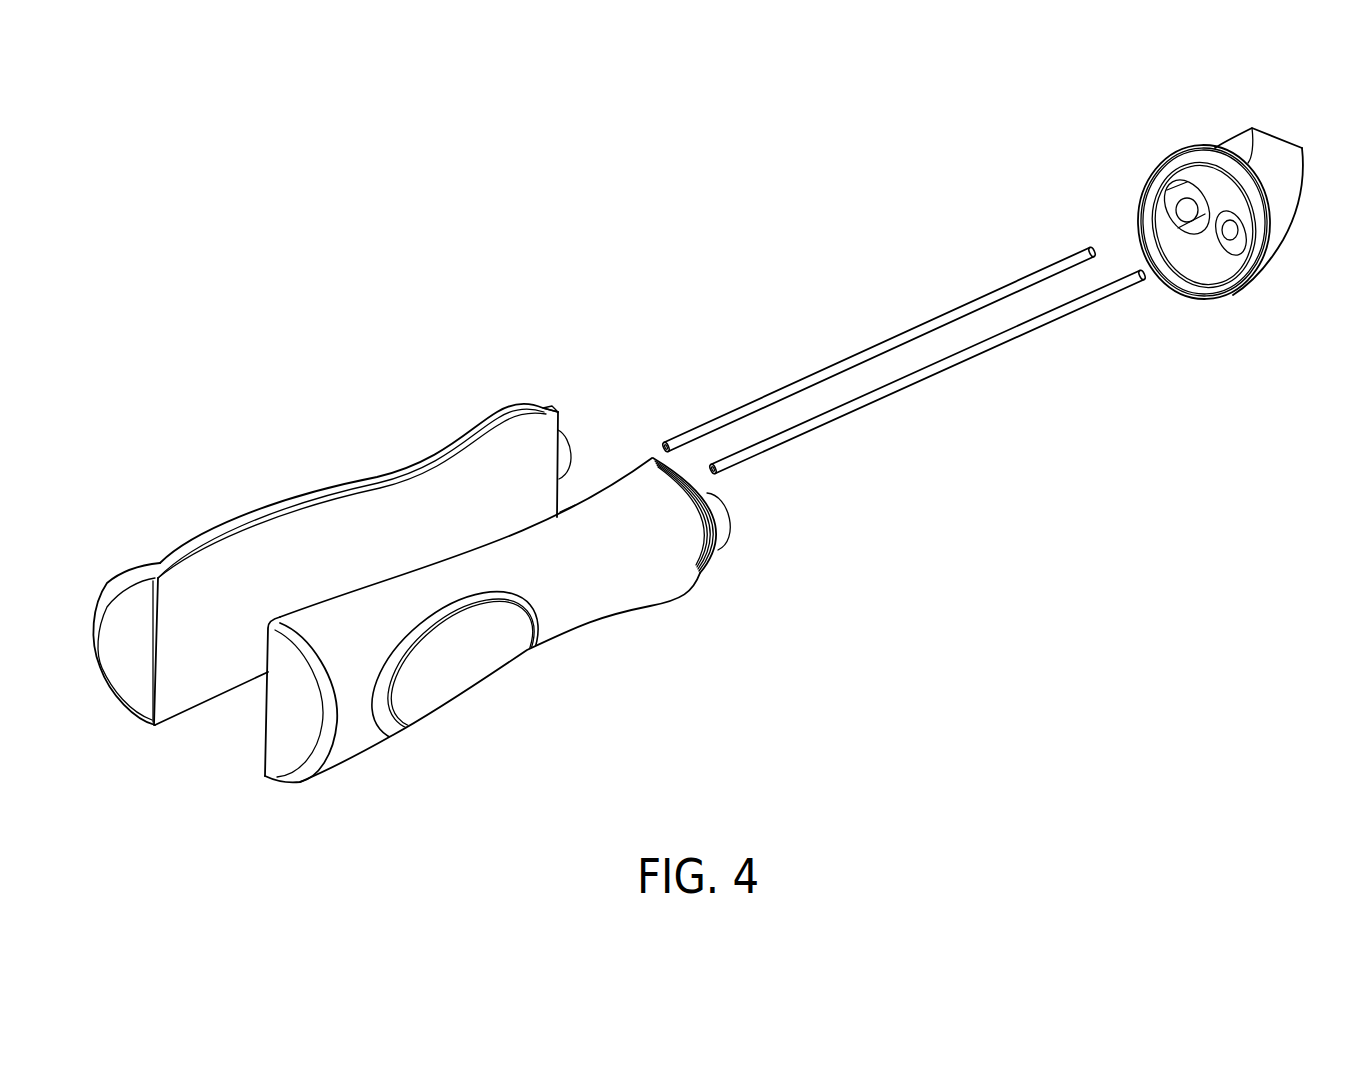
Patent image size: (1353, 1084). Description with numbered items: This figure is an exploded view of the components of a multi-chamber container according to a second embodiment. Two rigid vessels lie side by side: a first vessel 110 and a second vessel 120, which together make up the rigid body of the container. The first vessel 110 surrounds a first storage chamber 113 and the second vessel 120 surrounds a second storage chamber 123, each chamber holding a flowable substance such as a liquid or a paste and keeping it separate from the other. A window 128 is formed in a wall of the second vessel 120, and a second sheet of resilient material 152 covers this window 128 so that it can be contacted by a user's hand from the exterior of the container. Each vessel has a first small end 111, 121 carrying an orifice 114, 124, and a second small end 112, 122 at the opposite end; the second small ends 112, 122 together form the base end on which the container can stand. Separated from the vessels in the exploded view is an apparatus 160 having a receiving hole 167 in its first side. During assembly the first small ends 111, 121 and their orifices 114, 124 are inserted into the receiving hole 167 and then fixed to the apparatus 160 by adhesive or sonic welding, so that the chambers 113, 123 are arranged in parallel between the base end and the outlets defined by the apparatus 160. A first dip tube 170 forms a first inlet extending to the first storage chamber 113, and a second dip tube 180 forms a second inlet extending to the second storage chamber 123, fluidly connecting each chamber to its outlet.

The first vessel 110 is at (432, 462).
The first small end 111 is at (569, 421).
The second small end 112 is at (132, 682).
The first storage chamber 113 is at (336, 538).
The orifice 114 is at (580, 446).
The second vessel 120 is at (648, 580).
The first small end 121 is at (713, 578).
The second small end 122 is at (300, 748).
The second storage chamber 123 is at (585, 597).
The orifice 124 is at (740, 512).
The window 128 is at (394, 717).
The second sheet of resilient material 152 is at (480, 668).
The apparatus 160 is at (1173, 145).
The receiving hole 167 is at (1168, 199).
The first dip tube 170 is at (938, 306).
The second dip tube 180 is at (878, 381).